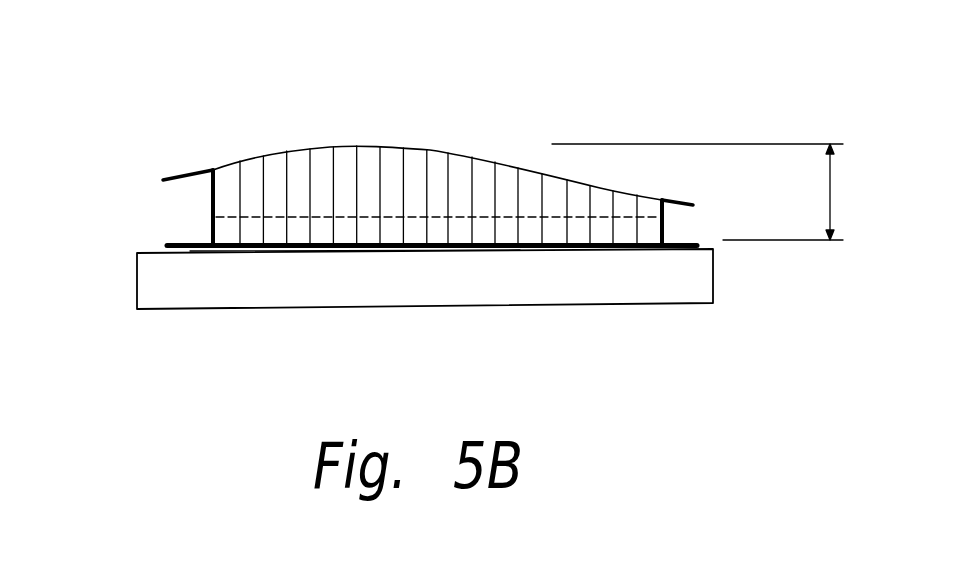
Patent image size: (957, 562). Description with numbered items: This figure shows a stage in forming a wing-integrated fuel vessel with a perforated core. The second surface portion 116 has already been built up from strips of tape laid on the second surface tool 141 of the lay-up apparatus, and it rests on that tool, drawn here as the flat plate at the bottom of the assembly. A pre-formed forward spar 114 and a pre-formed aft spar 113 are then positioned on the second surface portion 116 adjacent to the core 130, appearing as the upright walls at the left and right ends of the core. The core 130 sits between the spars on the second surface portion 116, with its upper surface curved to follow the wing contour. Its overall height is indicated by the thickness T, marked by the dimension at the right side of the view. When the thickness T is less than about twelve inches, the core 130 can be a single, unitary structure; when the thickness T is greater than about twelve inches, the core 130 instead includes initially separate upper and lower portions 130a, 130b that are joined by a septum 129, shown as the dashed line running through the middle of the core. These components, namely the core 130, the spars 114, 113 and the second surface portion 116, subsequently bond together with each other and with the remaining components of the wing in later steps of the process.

The core 130 is at (415, 178).
The upper portion 130a is at (273, 165).
The lower portion 130b is at (187, 247).
The septum 129 is at (363, 215).
The forward spar 114 is at (212, 197).
The aft spar 113 is at (663, 217).
The second surface portion 116 is at (640, 248).
The second surface tool 141 is at (715, 282).
The thickness T is at (830, 192).